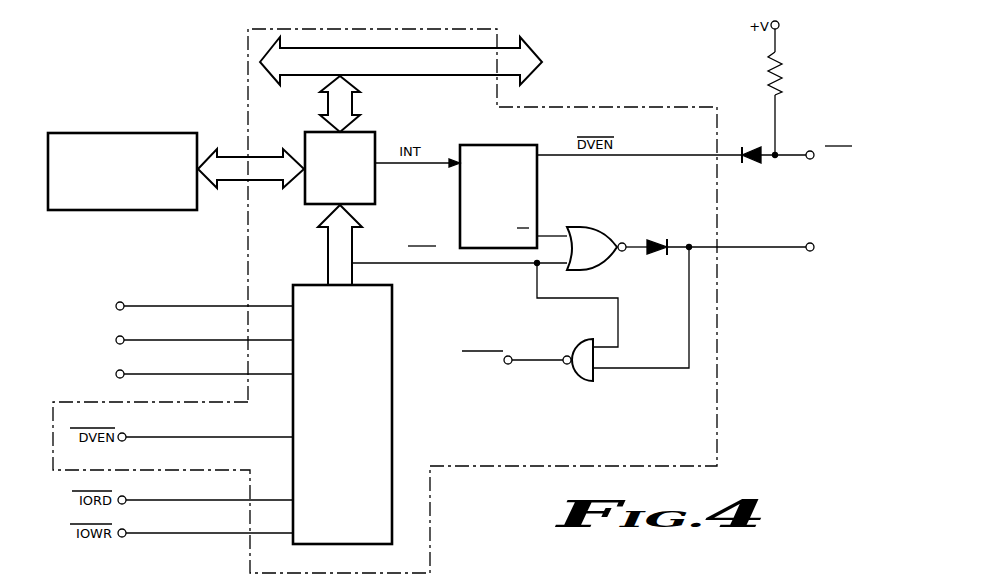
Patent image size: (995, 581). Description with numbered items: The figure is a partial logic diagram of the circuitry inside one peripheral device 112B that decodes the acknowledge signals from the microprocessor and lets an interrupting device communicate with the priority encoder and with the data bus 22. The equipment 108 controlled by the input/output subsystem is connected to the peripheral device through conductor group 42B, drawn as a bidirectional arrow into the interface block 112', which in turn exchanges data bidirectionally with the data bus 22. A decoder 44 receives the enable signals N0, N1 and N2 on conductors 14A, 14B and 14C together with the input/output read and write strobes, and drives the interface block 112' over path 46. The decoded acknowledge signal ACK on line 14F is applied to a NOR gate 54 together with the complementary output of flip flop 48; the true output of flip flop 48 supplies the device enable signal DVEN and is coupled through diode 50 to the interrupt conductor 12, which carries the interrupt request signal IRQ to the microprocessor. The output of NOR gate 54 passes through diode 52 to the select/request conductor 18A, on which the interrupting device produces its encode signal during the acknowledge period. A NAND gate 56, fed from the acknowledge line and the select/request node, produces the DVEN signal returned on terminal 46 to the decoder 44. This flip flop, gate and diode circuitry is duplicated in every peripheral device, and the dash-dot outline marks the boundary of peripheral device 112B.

The equipment 108 is at (180, 133).
The data bus 22 is at (420, 48).
The parallel/data interface (P/D) 112' is at (362, 155).
The conductor group 42B is at (270, 181).
The flip flop 48 is at (516, 145).
The decoder output / device enable (DVEN) line 46 is at (357, 247).
The decoder 44 is at (310, 285).
The address input N0 14A is at (124, 302).
The address input N1 14B is at (124, 336).
The address input N2 14C is at (124, 370).
The acknowledge (ACK) line 14F is at (422, 267).
The NOR gate 54 is at (598, 227).
The diode 52 is at (657, 240).
The diode 50 is at (750, 164).
The interrupt conductor 12 is at (812, 148).
The select/request conductor 18A is at (812, 243).
The NAND gate 56 is at (580, 381).
The peripheral device 112B is at (432, 540).